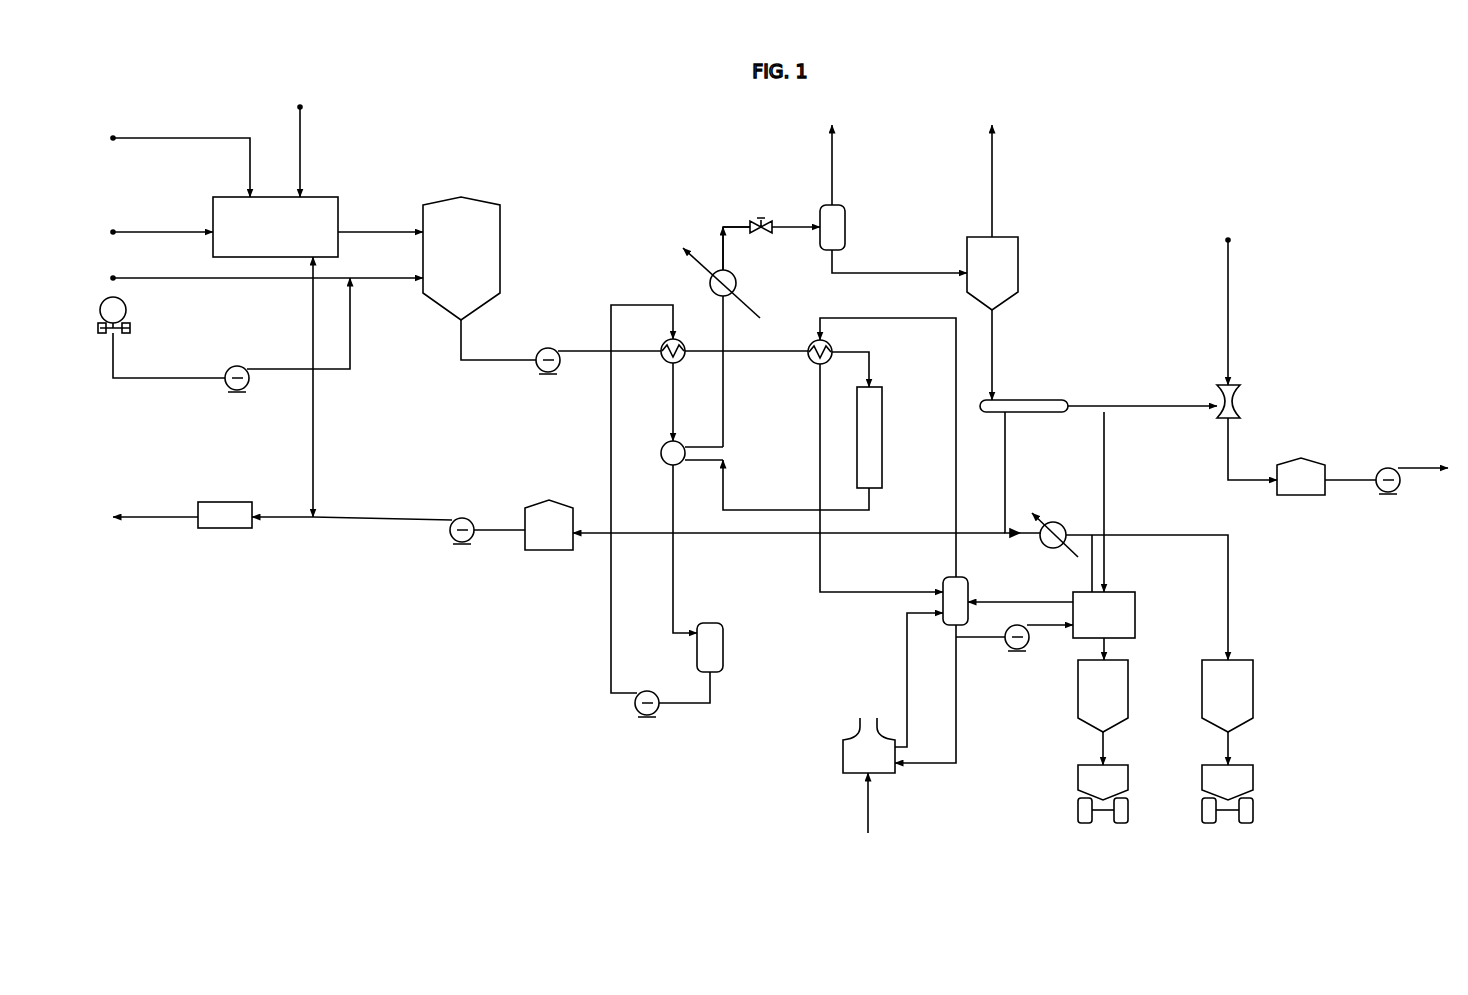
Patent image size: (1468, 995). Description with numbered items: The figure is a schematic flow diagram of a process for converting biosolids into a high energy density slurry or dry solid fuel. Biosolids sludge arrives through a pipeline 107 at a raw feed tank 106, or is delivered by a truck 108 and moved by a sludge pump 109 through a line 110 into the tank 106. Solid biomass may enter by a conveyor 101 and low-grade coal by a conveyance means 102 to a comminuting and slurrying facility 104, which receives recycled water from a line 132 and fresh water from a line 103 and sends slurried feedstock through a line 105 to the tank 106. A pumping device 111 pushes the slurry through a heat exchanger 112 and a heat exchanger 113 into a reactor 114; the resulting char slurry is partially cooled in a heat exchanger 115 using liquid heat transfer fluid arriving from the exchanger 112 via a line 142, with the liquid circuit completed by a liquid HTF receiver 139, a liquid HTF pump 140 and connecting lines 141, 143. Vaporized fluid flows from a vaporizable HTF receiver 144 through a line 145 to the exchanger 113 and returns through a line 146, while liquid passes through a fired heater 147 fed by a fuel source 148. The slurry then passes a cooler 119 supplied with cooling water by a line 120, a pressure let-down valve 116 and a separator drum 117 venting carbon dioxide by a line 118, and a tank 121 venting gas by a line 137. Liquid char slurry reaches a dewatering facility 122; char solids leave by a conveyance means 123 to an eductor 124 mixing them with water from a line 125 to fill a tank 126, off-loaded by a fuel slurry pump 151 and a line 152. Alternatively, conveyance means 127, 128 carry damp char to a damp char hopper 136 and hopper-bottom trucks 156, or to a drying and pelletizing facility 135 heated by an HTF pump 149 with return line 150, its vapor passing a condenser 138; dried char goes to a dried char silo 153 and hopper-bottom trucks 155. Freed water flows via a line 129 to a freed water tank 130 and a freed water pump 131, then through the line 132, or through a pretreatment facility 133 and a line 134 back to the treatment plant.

The conveyor 101 is at (180, 156).
The conveyance means 102 is at (162, 221).
The line 103 is at (310, 151).
The comminuting and slurrying facility 104 is at (275, 227).
The line 105 is at (380, 220).
The raw feed tank 106 is at (461, 258).
The pipeline 107 is at (267, 280).
The truck 108 is at (161, 337).
The sludge pump 109 is at (238, 394).
The line 110 is at (308, 323).
The pumping device 111 is at (547, 378).
The heat exchanger 112 is at (687, 361).
The heat exchanger 113 is at (802, 345).
The reactor 114 is at (867, 437).
The heat exchanger 115 is at (671, 452).
The pressure let-down valve 116 is at (771, 244).
The separator drum 117 is at (852, 219).
The line 118 is at (815, 165).
The cooler 119 is at (741, 285).
The line 120 is at (704, 283).
The tank 121 is at (992, 273).
The dewatering facility 122 is at (1024, 418).
The conveyance means 123 is at (1142, 420).
The eductor 124 is at (1247, 401).
The line 125 is at (1213, 311).
The tank 126 is at (1301, 490).
The conveyance means 127 is at (1089, 502).
The conveyance means 128 is at (1147, 585).
The line 129 is at (789, 546).
The freed water tank 130 is at (549, 539).
The freed water pump 131 is at (455, 542).
The line 132 is at (322, 397).
The pretreatment facility 133 is at (255, 515).
The line 134 is at (155, 530).
The drying and/or pelletizing facility 135 is at (1104, 615).
The damp char hopper 136 is at (1227, 696).
The line 137 is at (977, 181).
The condenser 138 is at (1060, 525).
The liquid HTF receiver 139 is at (728, 638).
The liquid HTF pump 140 is at (648, 718).
The connecting line 141 is at (627, 499).
The line 142 is at (657, 402).
The connecting line 143 is at (669, 549).
The vaporizable HTF receiver 144 is at (976, 592).
The line 145 is at (888, 447).
The line 146 is at (866, 478).
The fired heater 147 is at (847, 745).
The fuel source 148 is at (852, 803).
The HTF pump 149 is at (1016, 652).
The line 150 is at (1020, 590).
The fuel slurry pump 151 is at (1393, 495).
The line 152 is at (1423, 456).
The dried char silo 153 is at (1103, 696).
The hopper-bottom trucks 155 is at (1103, 794).
The hopper-bottom trucks 156 is at (1227, 794).